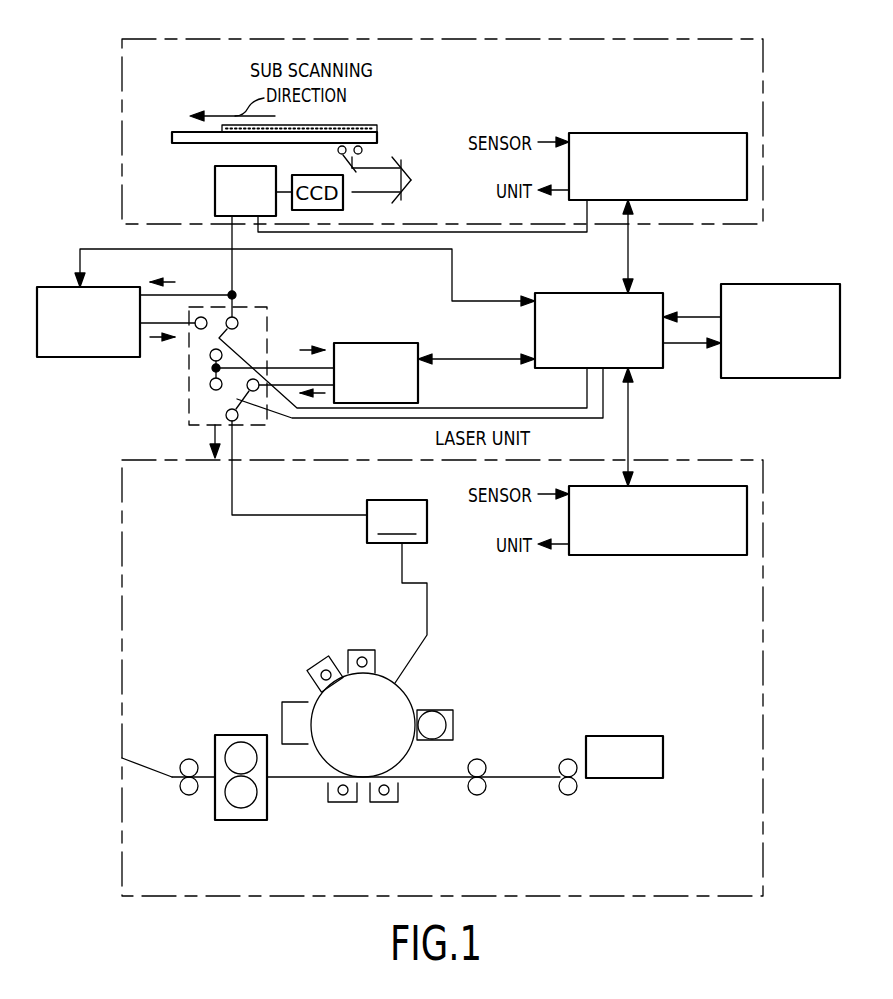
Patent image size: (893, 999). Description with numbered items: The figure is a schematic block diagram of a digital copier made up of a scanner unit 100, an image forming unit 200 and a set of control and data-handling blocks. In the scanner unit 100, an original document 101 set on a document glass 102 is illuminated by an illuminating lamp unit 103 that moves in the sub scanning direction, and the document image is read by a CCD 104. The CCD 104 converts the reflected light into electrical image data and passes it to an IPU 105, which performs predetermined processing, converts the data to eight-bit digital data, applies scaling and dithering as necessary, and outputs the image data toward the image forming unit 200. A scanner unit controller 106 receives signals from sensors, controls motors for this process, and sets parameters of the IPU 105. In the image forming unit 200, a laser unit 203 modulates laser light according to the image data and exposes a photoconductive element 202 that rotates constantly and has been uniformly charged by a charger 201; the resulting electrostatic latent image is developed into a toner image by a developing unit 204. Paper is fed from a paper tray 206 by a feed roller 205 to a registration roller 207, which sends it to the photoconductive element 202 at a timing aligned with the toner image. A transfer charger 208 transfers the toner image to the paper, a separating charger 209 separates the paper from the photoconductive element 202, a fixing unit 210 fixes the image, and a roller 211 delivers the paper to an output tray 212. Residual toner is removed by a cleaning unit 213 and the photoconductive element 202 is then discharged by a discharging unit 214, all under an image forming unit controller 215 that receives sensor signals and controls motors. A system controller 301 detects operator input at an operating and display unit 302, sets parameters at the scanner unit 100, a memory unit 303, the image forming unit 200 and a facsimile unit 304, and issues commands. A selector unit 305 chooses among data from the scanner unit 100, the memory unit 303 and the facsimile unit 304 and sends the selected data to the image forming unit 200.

The scanner unit 100 is at (640, 38).
The original document 101 is at (378, 126).
The document glass 102 is at (172, 134).
The illuminating lamp unit 103 is at (362, 152).
The CCD 104 is at (345, 210).
The IPU (image processing unit) 105 is at (215, 190).
The scanner unit controller 106 is at (602, 131).
The image forming unit 200 is at (700, 455).
The charger 201 is at (362, 648).
The photoconductive element 202 is at (410, 690).
The laser unit 203 is at (397, 591).
The developing unit 204 is at (455, 725).
The feed roller 205 is at (562, 760).
The paper tray 206 is at (663, 750).
The registration roller 207 is at (485, 795).
The transfer charger 208 is at (390, 805).
The separating charger 209 is at (343, 805).
The fixing unit 210 is at (236, 822).
The roller 211 is at (186, 758).
The output tray 212 is at (148, 770).
The cleaning unit 213 is at (296, 700).
The discharging unit 214 is at (316, 660).
The image forming unit controller 215 is at (747, 516).
The system controller 301 is at (648, 292).
The operating and display unit 302 is at (788, 283).
The memory unit 303 is at (364, 342).
The facsimile unit 304 is at (75, 358).
The selector unit 305 is at (189, 412).